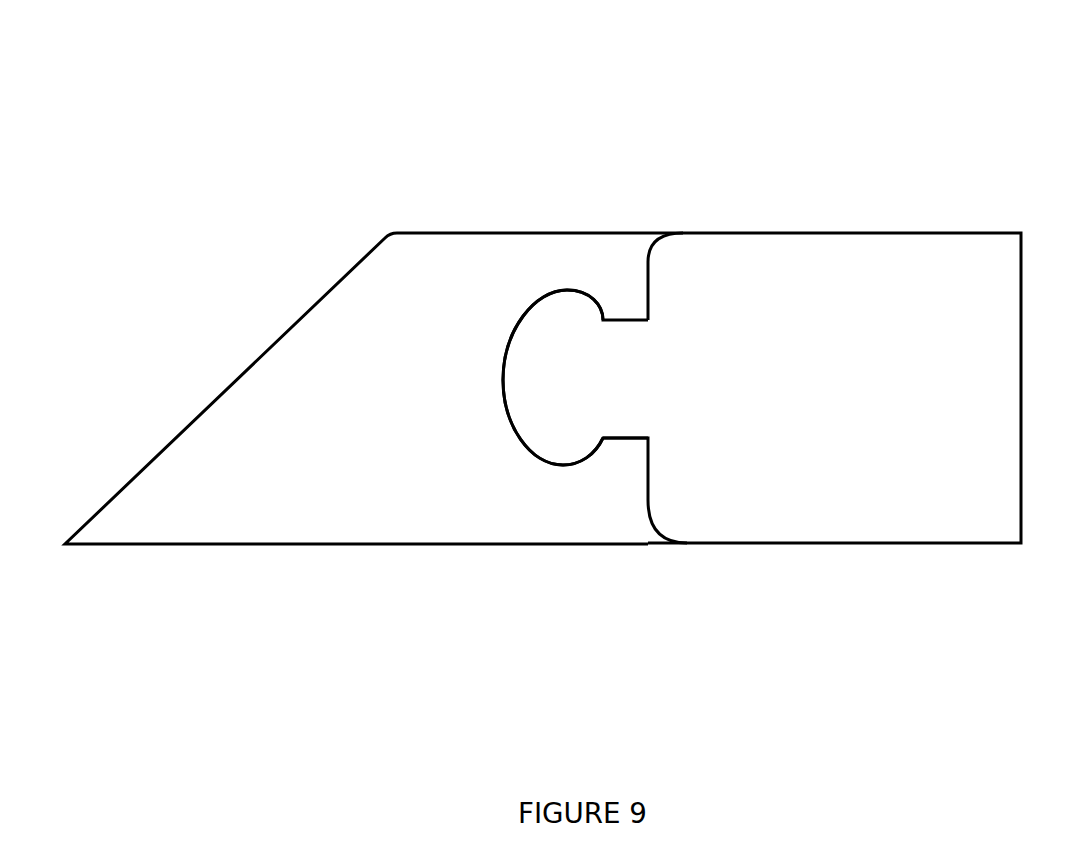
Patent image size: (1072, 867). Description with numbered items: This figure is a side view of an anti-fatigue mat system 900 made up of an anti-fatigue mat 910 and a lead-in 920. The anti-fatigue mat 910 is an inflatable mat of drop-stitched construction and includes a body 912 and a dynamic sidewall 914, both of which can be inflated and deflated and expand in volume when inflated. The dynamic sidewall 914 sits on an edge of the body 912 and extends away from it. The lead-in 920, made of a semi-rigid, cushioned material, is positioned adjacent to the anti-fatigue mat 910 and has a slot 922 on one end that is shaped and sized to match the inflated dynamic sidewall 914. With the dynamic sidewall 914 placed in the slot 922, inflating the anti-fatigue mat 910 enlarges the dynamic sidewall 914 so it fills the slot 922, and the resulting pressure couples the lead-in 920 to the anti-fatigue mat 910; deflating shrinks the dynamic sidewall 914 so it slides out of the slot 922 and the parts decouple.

The anti-fatigue mat system 900 is at (170, 104).
The anti-fatigue mat 910 is at (855, 232).
The body 912 is at (743, 285).
The dynamic sidewall 914 is at (565, 357).
The lead-in 920 is at (403, 305).
The slot 922 is at (617, 438).